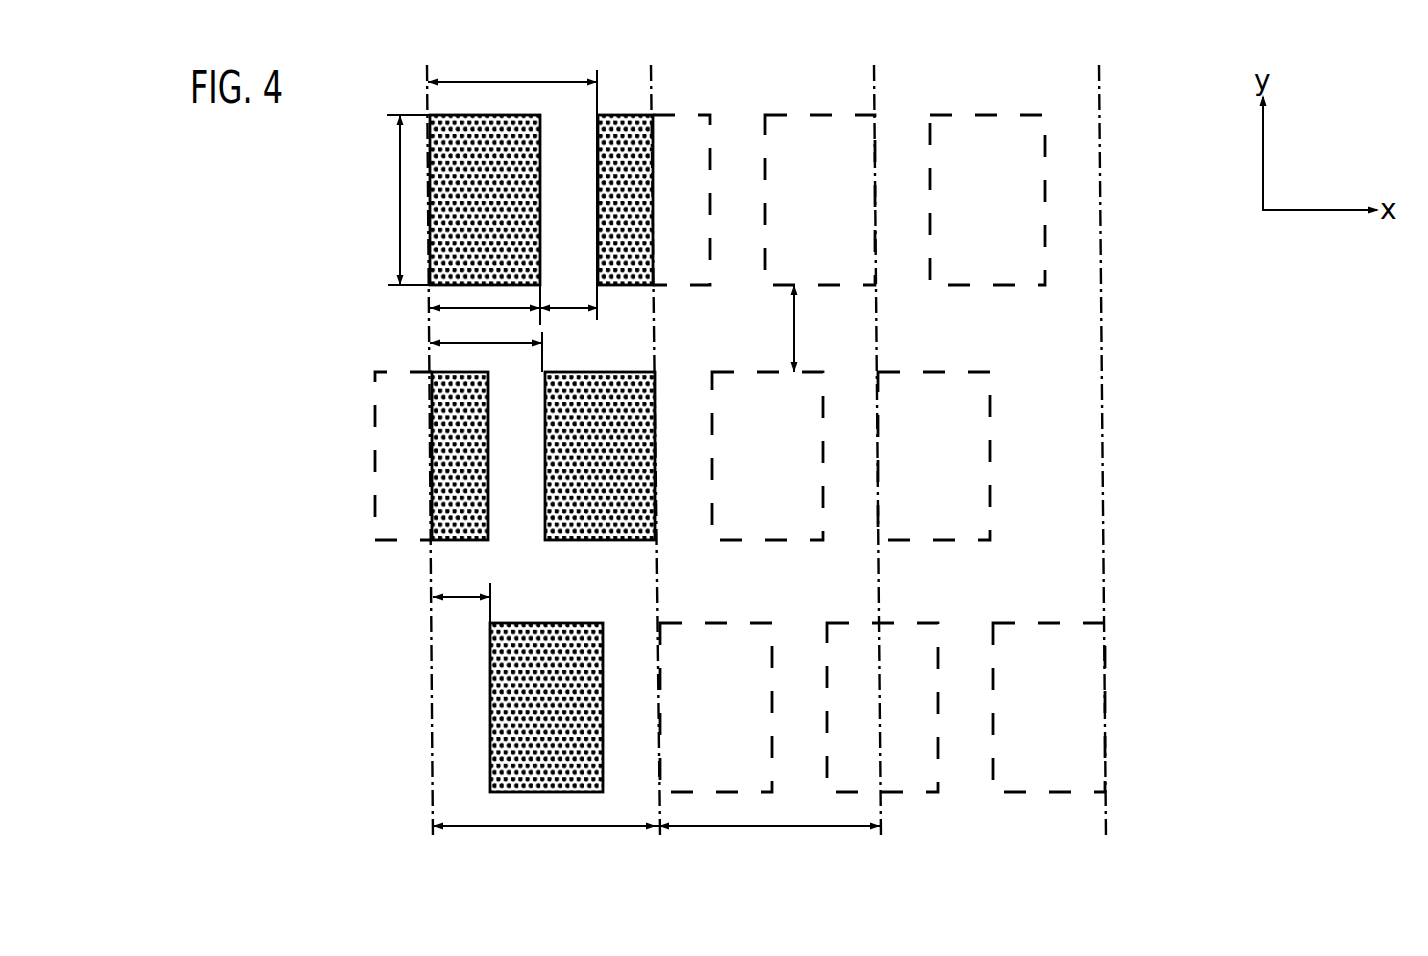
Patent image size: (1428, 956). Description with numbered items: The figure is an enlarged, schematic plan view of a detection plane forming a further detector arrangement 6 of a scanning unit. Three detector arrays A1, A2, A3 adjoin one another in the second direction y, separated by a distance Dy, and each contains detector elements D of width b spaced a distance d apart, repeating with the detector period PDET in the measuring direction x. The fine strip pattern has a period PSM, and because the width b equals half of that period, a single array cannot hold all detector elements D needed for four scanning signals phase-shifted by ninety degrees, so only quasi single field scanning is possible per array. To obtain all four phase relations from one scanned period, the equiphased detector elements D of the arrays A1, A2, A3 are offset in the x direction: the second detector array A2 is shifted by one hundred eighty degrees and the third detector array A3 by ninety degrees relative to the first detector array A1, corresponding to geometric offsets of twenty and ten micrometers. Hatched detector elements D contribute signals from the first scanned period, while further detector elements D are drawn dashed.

The detector element D is at (440, 168).
The first detector array A1 is at (318, 203).
The second detector array A2 is at (322, 458).
The third detector array A3 is at (322, 710).
The detector arrangement 6 is at (1207, 430).